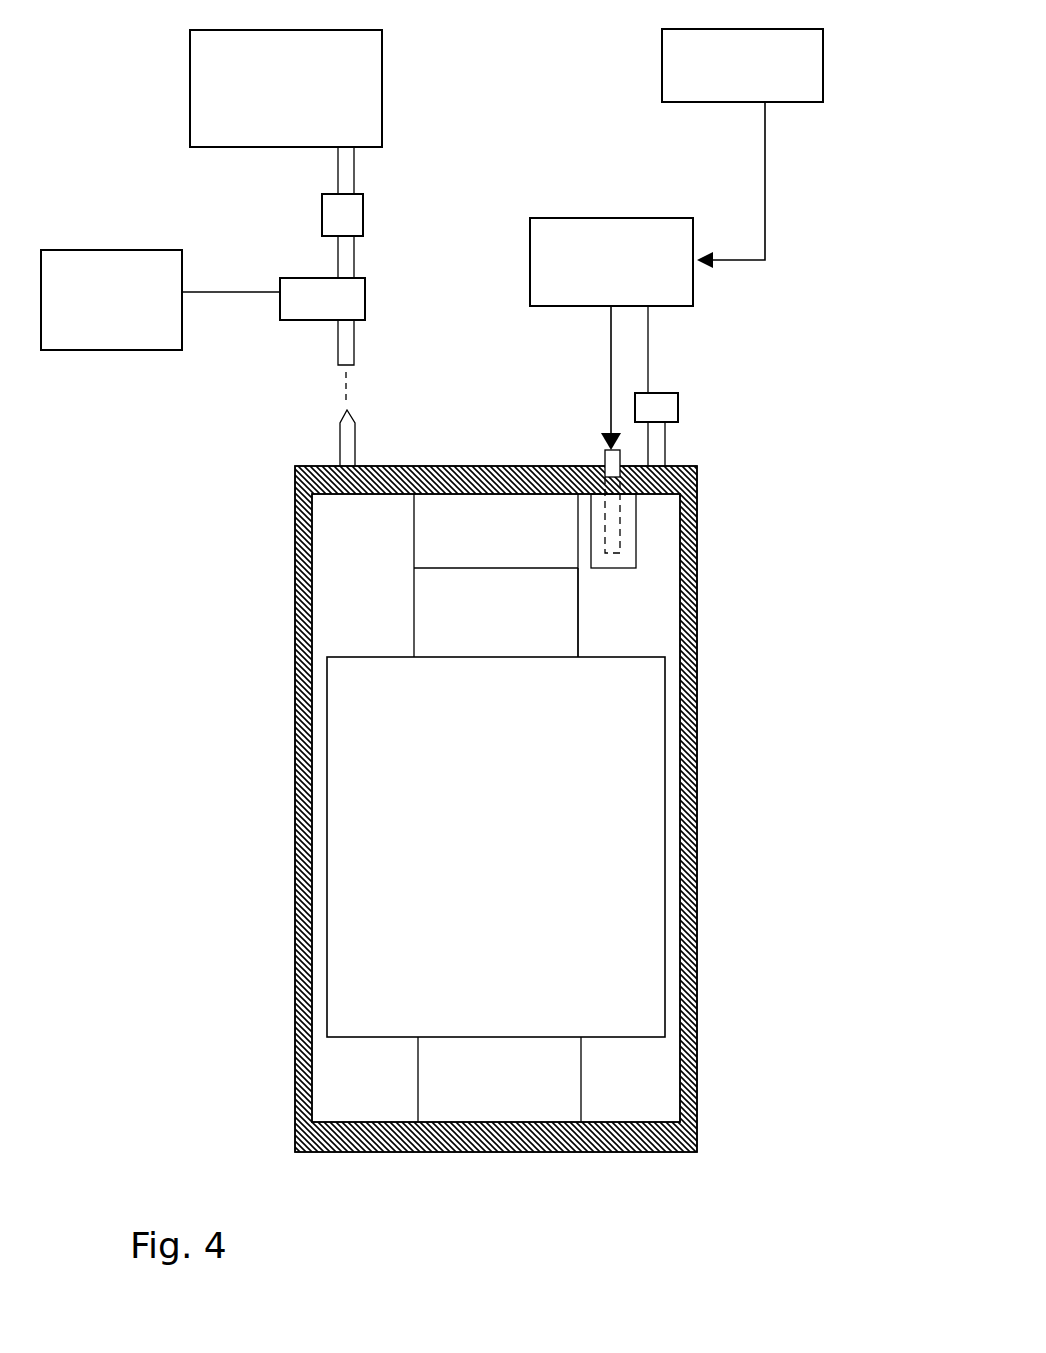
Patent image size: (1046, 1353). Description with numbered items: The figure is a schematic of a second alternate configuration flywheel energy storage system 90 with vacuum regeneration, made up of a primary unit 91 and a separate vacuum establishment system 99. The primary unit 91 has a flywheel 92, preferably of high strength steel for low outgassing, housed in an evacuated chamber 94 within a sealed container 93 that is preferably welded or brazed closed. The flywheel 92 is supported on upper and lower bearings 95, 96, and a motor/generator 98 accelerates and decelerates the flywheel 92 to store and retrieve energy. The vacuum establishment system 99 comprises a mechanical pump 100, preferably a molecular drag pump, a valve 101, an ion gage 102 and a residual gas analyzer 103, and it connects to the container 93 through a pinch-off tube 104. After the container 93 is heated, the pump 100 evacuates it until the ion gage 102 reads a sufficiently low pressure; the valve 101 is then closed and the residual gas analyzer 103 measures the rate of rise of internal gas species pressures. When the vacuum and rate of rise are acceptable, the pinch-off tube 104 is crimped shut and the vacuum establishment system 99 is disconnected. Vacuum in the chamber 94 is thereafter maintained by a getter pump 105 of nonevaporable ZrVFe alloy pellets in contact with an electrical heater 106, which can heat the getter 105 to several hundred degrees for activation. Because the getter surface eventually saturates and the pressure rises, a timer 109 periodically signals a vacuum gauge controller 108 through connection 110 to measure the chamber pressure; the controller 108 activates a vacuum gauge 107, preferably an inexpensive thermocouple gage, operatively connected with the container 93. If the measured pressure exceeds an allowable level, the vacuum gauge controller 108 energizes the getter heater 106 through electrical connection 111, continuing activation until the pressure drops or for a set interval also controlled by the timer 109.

The flywheel energy storage system 90 is at (836, 272).
The primary unit 91 is at (712, 614).
The flywheel 92 is at (667, 804).
The sealed container 93 is at (698, 904).
The evacuated chamber 94 is at (652, 1094).
The upper bearing 95 is at (580, 628).
The lower bearing 96 is at (417, 1085).
The motor/generator 98 is at (410, 548).
The vacuum establishment system 99 is at (100, 150).
The mechanical pump 100 is at (383, 73).
The valve 101 is at (365, 208).
The ion gage 102 is at (366, 298).
The residual gas analyzer 103 is at (155, 350).
The pinch-off tube 104 is at (357, 450).
The getter pump 105 is at (637, 518).
The electrical heater 106 is at (620, 540).
The vacuum gauge 107 is at (678, 409).
The vacuum gauge controller 108 is at (620, 216).
The timer 109 is at (823, 62).
The connection 110 is at (766, 166).
The electrical connection 111 is at (610, 376).